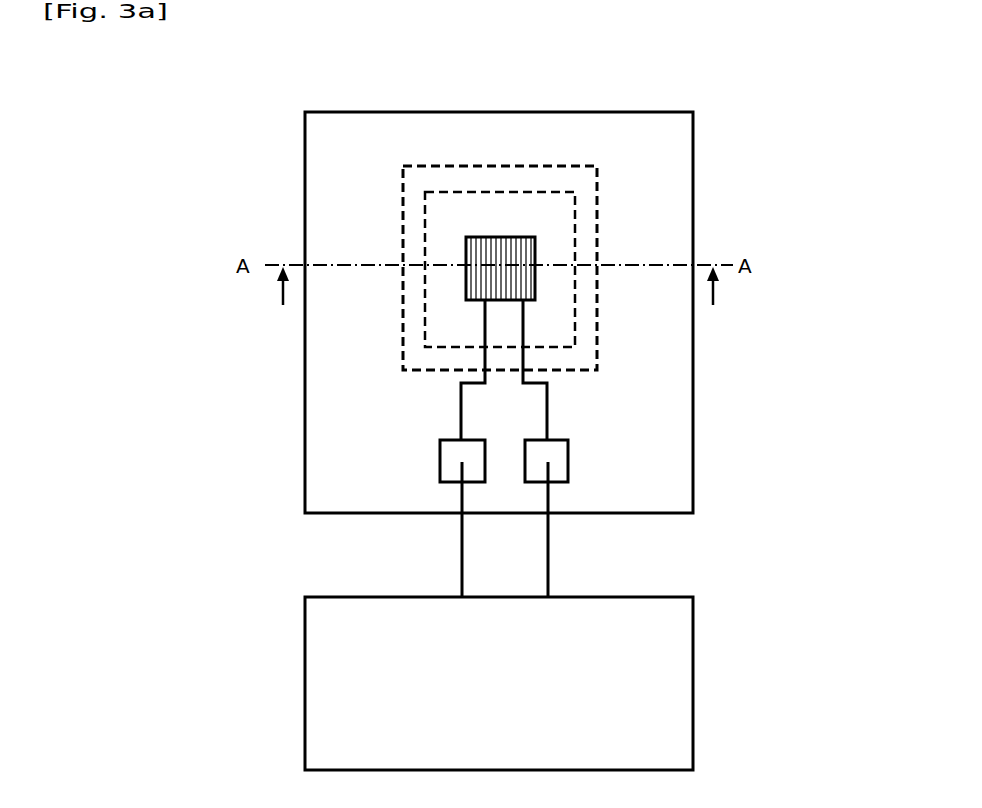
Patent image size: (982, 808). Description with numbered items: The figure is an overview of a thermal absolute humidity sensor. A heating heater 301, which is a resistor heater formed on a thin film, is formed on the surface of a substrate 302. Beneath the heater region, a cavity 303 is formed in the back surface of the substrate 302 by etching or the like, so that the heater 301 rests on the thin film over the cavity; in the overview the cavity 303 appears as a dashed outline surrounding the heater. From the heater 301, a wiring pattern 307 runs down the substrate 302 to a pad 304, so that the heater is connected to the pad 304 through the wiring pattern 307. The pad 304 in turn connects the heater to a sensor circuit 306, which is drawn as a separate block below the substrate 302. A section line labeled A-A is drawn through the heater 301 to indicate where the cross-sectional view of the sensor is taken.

The heating heater 301 is at (500, 243).
The substrate 302 is at (318, 410).
The cavity 303 is at (575, 192).
The pad 304 is at (558, 460).
The sensor circuit 306 is at (317, 642).
The wiring pattern 307 is at (548, 398).